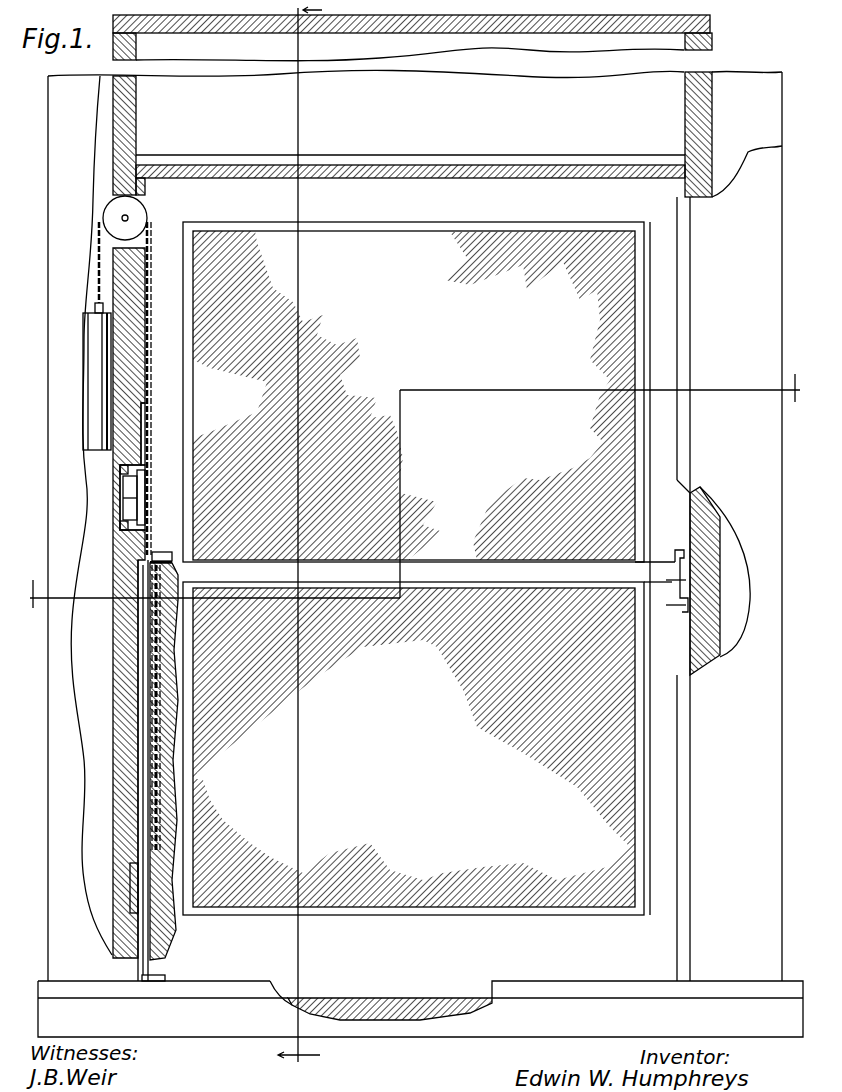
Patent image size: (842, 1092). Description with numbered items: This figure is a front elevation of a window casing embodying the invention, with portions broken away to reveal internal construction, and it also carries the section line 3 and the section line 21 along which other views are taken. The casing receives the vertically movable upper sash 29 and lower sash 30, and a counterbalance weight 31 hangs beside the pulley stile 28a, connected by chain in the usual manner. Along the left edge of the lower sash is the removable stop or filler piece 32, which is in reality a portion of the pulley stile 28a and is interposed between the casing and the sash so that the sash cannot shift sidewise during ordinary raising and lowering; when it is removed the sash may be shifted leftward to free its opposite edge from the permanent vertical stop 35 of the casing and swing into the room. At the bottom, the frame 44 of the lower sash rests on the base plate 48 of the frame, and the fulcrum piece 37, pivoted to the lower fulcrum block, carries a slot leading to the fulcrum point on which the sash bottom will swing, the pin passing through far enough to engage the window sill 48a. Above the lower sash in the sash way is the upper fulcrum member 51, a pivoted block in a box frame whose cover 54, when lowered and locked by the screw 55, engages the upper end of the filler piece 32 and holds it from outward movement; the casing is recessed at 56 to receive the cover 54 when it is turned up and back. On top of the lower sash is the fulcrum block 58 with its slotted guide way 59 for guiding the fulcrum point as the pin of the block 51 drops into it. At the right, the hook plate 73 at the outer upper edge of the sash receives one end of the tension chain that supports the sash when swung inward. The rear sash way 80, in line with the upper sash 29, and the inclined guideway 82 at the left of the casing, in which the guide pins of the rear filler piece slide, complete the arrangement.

The section line 3- 3 is at (300, 543).
The section line 21- 21 is at (412, 485).
The pulley stile 28a is at (150, 250).
The upper sash 29 is at (432, 205).
The lower sash 30 is at (432, 880).
The counterbalance weight 31 is at (95, 385).
The removable stop or filler piece 32 is at (145, 773).
The vertical stop 35 is at (680, 418).
The fulcrum piece 37 is at (168, 976).
The frame of the sash 44 is at (450, 1003).
The base plate 48 is at (365, 1013).
The window sill 48a is at (510, 990).
The upper fulcrum member 51 is at (130, 497).
The cover 54 is at (152, 497).
The screw 55 is at (155, 505).
The recess 56 is at (145, 428).
The fulcrum block 58 is at (167, 547).
The slotted guide way 59 is at (168, 553).
The hook plate 73 is at (692, 522).
The sash way 80 is at (150, 600).
The inclined guideway 82 is at (135, 893).